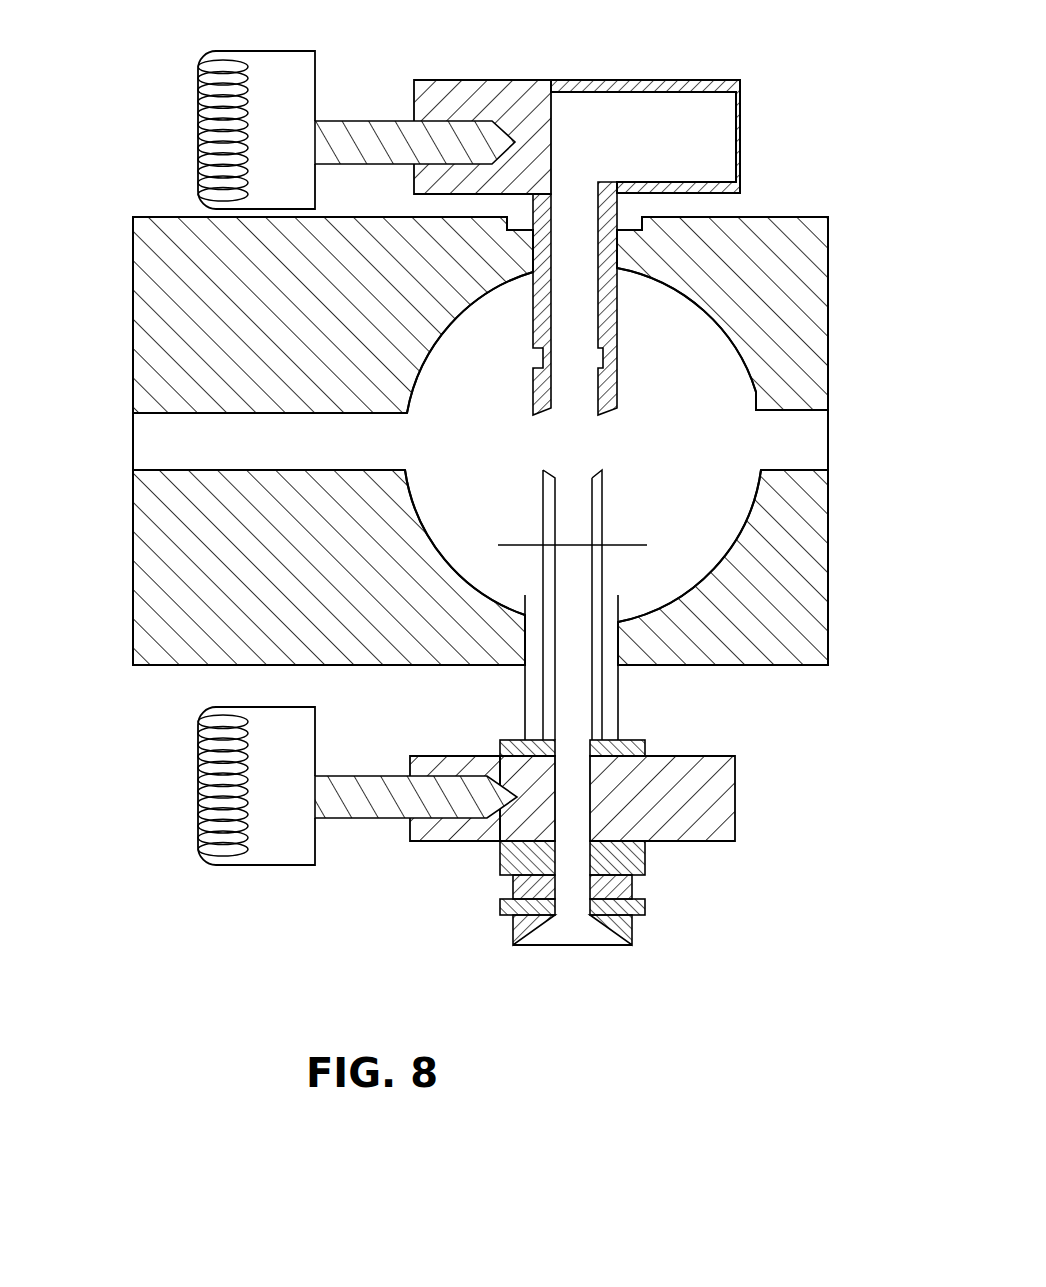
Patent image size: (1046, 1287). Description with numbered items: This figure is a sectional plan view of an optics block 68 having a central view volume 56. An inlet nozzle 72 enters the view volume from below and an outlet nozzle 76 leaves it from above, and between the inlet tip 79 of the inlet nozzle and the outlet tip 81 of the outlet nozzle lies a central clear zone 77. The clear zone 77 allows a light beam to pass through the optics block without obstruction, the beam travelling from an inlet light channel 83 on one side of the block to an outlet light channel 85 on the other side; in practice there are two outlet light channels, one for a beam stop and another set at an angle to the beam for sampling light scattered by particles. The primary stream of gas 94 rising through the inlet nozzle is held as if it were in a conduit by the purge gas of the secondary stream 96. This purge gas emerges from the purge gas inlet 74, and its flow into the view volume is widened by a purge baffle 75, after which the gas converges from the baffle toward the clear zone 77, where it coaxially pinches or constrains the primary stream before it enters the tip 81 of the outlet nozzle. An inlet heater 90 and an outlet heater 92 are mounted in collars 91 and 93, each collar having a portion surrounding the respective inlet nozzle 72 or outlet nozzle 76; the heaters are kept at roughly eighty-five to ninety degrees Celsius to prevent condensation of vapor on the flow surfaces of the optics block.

The central view volume 56 is at (663, 385).
The optics block 68 is at (148, 287).
The inlet nozzle 72 is at (697, 836).
The purge gas inlet 74 is at (613, 693).
The purge baffle 75 is at (633, 548).
The outlet nozzle 76 is at (722, 155).
The central clear zone 77 is at (580, 441).
The inlet tip 79 is at (574, 946).
The outlet tip 81 is at (743, 102).
The inlet light channel 83 is at (145, 440).
The outlet light channel 85 is at (800, 446).
The inlet heater 90 is at (387, 790).
The collar 91 is at (473, 833).
The outlet heater 92 is at (364, 138).
The collar 93 is at (473, 88).
The primary stream of gas 94 is at (573, 507).
The secondary stream 96 is at (630, 502).